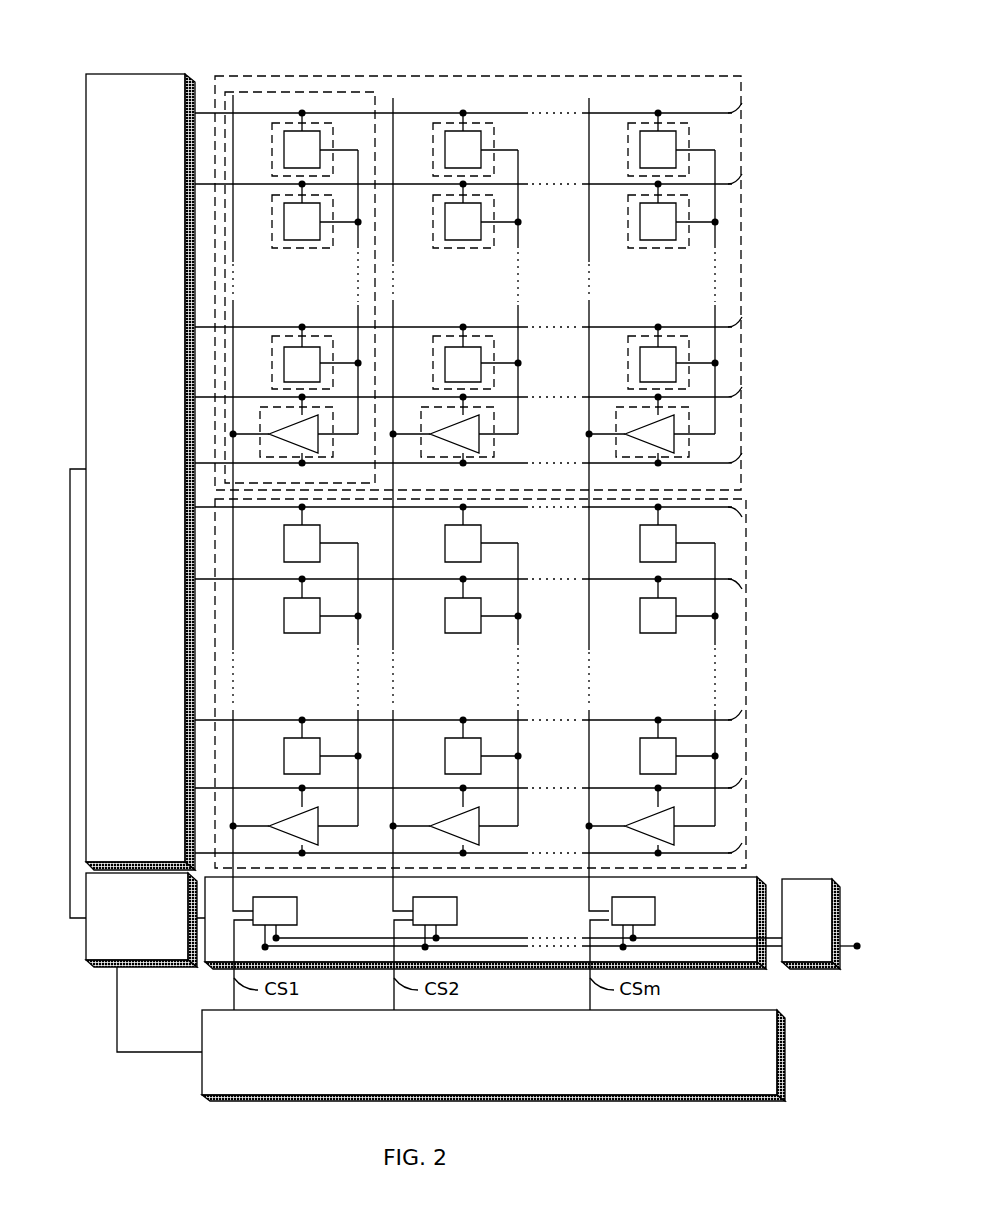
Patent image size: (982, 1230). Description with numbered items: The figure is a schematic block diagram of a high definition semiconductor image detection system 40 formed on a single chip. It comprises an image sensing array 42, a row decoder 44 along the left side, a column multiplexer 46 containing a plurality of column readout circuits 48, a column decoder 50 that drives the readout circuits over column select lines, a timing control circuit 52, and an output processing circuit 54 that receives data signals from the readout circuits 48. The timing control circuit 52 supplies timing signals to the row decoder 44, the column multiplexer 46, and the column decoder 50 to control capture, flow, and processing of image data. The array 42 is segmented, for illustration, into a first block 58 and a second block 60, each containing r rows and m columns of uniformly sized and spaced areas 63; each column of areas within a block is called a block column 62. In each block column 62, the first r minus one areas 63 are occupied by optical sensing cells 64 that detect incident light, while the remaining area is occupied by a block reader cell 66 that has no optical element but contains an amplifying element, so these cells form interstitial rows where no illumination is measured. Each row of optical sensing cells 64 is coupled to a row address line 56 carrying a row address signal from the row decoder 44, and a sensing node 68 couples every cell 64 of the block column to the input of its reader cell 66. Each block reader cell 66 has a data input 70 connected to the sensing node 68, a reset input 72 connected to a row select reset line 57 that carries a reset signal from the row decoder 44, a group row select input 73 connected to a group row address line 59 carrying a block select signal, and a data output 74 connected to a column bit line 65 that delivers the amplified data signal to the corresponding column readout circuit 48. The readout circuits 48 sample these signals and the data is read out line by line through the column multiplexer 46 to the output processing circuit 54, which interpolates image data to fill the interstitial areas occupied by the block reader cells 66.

The high definition semiconductor image detection system 40 is at (117, 44).
The image sensing array 42 is at (765, 49).
The row decoder 44 is at (123, 504).
The column multiplexer 46 is at (757, 880).
The column readout circuit 48 is at (265, 921).
The column decoder 50 is at (479, 1086).
The timing control circuit 52 is at (126, 953).
The output processing circuit 54 is at (796, 944).
The row address line 56 is at (278, 325).
The row select reset line 57 is at (207, 395).
The first block 58 is at (640, 76).
The group row address line 59 is at (207, 462).
The second block 60 is at (745, 503).
The block column 62 is at (300, 92).
The area 63 is at (432, 132).
The optical sensing cell 64 is at (292, 160).
The column bit line 65 is at (234, 557).
The block reader cell 66 is at (298, 443).
The sensing node 68 is at (358, 250).
The data input 70 is at (323, 433).
The reset input 72 is at (304, 418).
The group row select input 73 is at (300, 452).
The data output 74 is at (273, 430).